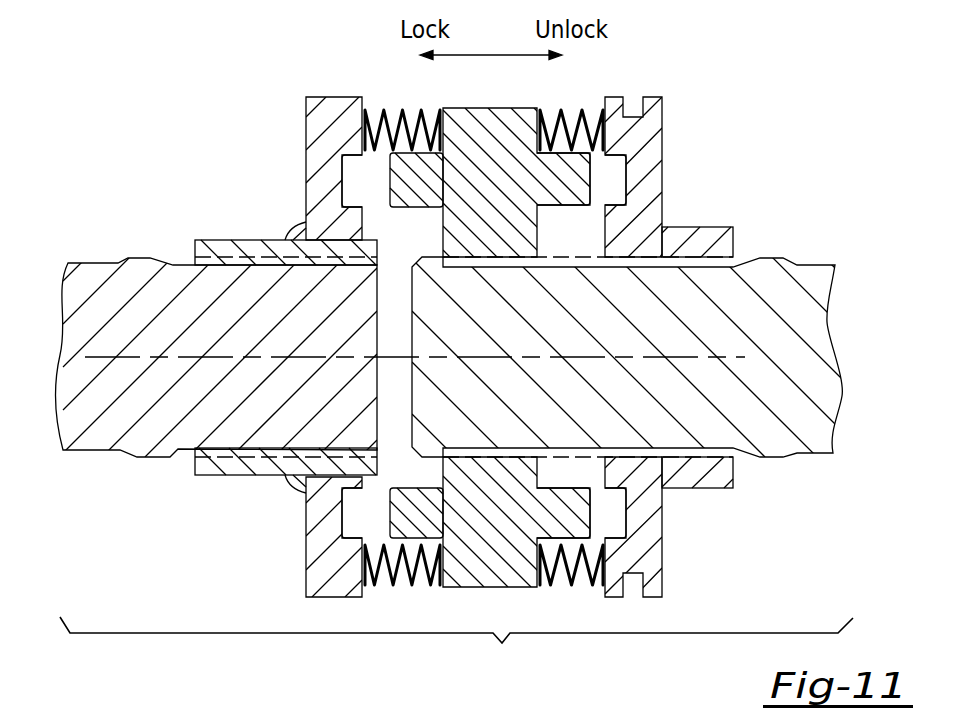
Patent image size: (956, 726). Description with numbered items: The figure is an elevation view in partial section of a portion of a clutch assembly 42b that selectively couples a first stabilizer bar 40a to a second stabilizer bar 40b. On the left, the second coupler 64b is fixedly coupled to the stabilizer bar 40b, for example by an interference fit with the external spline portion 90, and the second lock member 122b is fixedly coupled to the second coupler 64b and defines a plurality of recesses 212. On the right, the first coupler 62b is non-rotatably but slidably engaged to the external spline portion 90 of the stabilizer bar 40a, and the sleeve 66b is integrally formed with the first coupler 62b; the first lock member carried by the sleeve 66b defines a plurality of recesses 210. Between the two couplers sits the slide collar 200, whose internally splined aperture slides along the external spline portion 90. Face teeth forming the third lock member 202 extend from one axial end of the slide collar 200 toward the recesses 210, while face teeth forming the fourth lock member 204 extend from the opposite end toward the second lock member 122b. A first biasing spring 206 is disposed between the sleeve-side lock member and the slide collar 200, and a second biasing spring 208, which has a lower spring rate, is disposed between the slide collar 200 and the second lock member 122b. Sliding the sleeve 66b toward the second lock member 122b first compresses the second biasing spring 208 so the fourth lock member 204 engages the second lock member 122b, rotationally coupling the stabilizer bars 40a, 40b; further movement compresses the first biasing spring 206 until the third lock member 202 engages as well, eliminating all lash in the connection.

The stabilizer bar 40a is at (822, 433).
The stabilizer bar 40b is at (93, 272).
The clutch assembly 42b is at (456, 646).
The first coupler 62b is at (708, 237).
The second coupler 64b is at (252, 477).
The sleeve 66b is at (653, 103).
The external spline portion 90 is at (190, 450).
The second lock member 122b is at (322, 117).
The slide collar 200 is at (493, 117).
The third lock member 202 is at (583, 197).
The fourth lock member 204 is at (402, 195).
The first biasing spring 206 is at (580, 110).
The second biasing spring 208 is at (407, 112).
The recesses 210 is at (617, 170).
The recesses 212 is at (347, 178).